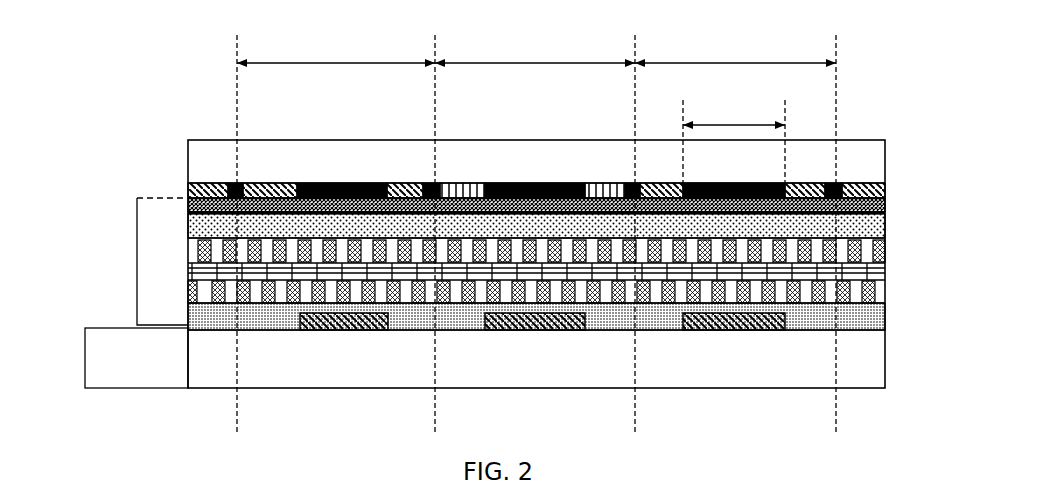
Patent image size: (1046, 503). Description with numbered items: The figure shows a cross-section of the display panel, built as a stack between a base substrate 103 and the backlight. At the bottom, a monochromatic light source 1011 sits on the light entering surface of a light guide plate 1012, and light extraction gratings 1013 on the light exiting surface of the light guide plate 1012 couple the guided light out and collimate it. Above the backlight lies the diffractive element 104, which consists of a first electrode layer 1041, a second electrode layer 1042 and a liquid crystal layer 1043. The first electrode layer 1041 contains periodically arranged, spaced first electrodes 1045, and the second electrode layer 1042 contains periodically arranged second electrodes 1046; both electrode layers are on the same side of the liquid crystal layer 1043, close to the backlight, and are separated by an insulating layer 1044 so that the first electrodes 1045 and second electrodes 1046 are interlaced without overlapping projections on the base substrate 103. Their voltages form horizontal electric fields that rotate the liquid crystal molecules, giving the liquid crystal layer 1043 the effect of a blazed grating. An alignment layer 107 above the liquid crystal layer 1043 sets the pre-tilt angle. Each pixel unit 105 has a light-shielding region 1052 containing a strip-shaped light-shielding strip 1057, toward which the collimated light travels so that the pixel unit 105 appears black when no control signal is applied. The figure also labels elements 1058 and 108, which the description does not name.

The base substrate 103 is at (868, 171).
The alignment layer 107 is at (880, 196).
The electrode segment 1058 is at (238, 185).
The light-shielding strip 1057 is at (786, 183).
The liquid crystal layer 1043 is at (880, 218).
The second electrode layer 1042 is at (880, 248).
The second electrodes 1046 is at (858, 255).
The insulating layer 1044 is at (880, 273).
The first electrode layer 1041 is at (187, 282).
The first electrodes 1045 is at (846, 296).
The bonding layer 108 is at (425, 331).
The light extraction grating 1013 is at (345, 332).
The light guide plate 1012 is at (520, 372).
The monochromatic light source 1011 is at (92, 352).
The diffractive element 104 is at (137, 262).
The pixel unit 105 is at (536, 235).
The light-shielding region 1052 is at (734, 141).